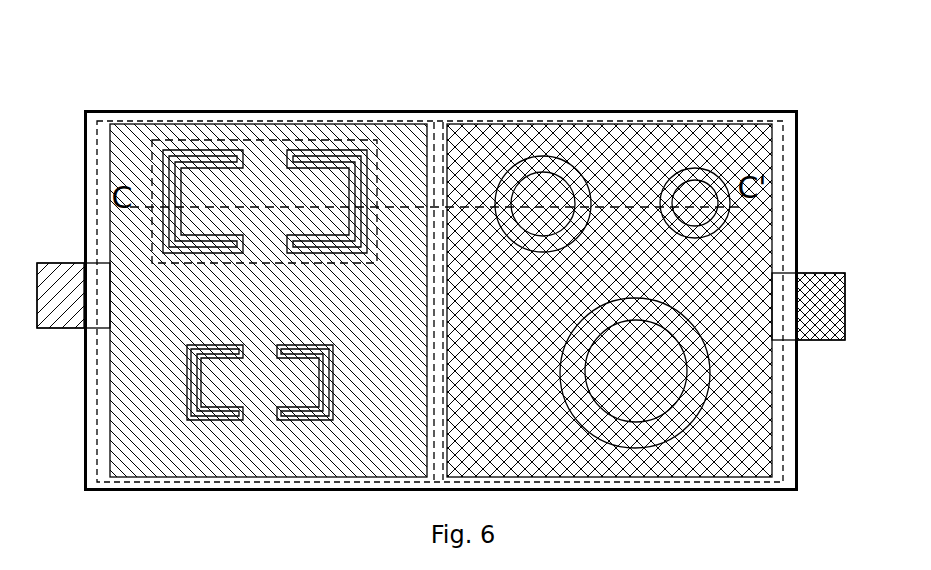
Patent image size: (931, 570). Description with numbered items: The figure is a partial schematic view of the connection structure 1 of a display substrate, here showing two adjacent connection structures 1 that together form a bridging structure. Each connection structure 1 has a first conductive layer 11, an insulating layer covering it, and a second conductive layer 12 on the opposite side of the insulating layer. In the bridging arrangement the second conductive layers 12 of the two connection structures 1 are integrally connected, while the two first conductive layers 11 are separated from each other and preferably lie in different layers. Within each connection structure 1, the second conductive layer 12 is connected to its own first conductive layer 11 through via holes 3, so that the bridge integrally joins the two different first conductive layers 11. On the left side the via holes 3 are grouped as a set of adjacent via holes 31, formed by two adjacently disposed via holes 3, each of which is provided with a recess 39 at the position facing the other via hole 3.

The connection structure 1 is at (387, 112).
The via hole 3 is at (183, 148).
The first conductive layer 11 is at (48, 263).
The second conductive layer 12 is at (436, 112).
The set of adjacent via holes 31 is at (256, 140).
The recess 39 is at (217, 200).